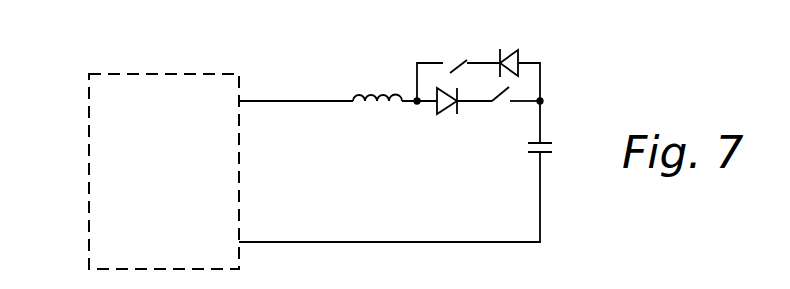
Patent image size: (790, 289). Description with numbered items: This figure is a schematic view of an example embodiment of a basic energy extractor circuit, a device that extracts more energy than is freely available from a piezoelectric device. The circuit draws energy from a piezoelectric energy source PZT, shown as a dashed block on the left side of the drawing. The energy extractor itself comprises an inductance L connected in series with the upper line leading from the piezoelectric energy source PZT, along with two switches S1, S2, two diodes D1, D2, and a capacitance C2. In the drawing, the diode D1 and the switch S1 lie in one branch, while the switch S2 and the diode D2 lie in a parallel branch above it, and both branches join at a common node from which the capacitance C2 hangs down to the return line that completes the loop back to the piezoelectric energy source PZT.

The piezoelectric energy source PZT is at (89, 178).
The inductance L is at (377, 82).
The switch S2 is at (453, 54).
The diode D2 is at (521, 49).
The diode D1 is at (450, 115).
The switch S1 is at (498, 107).
The capacitance C2 is at (549, 135).